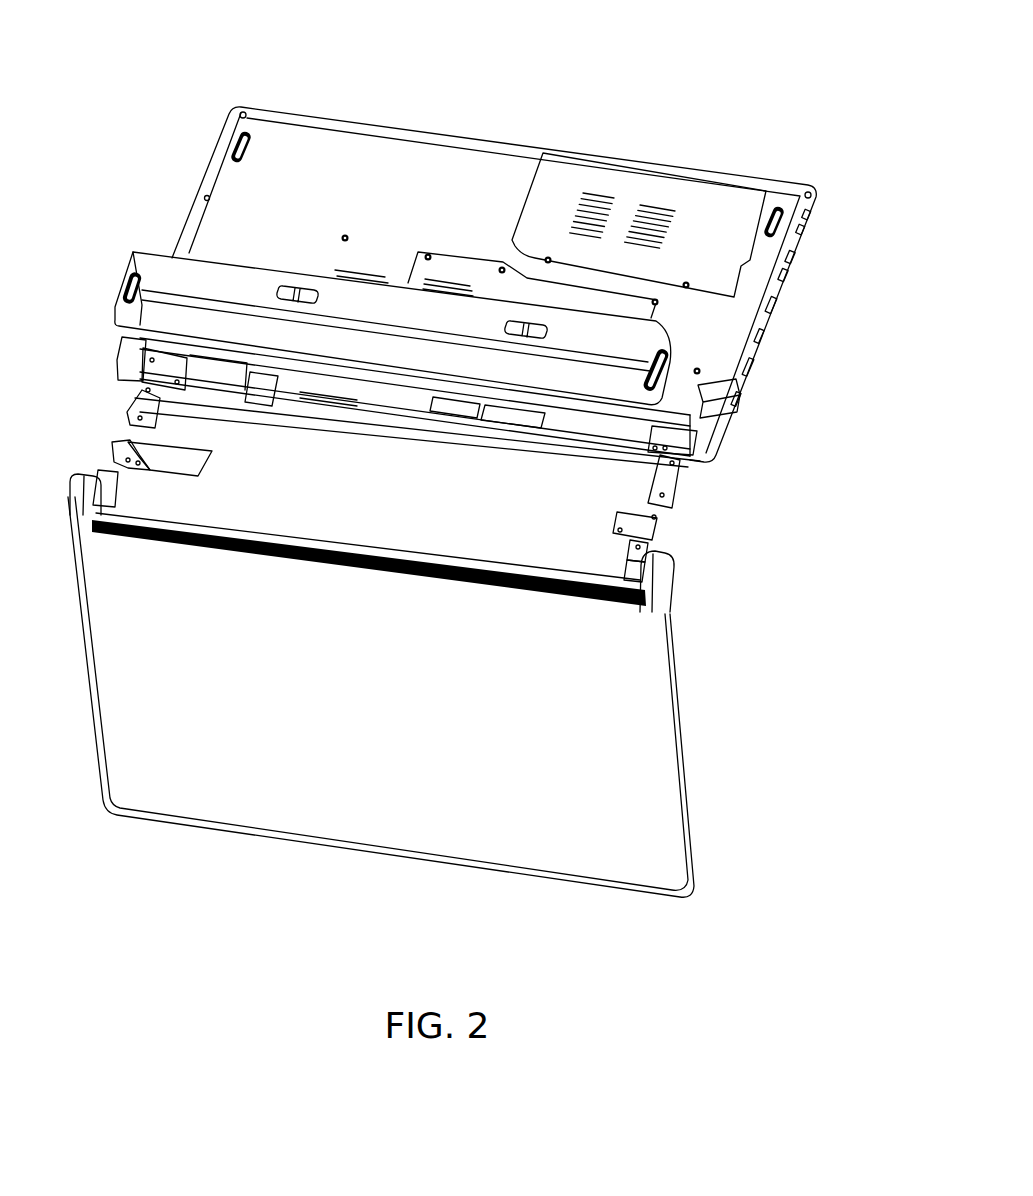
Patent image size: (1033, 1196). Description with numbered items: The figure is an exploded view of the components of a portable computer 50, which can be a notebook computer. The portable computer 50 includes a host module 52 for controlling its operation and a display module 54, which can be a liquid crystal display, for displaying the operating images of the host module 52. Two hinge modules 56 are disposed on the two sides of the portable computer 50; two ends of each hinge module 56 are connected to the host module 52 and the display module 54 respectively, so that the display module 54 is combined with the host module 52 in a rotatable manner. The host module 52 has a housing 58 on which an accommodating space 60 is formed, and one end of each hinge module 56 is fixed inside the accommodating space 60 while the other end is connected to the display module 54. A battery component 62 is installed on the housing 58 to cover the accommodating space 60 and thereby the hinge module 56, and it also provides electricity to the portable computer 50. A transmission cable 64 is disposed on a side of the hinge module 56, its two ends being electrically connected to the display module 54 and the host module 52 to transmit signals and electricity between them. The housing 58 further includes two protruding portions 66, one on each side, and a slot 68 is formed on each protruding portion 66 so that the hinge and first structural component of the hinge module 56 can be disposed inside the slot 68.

The portable computer 50 is at (652, 97).
The host module 52 is at (762, 370).
The display module 54 is at (705, 780).
The hinge module 56 is at (110, 448).
The housing 58 is at (143, 353).
The accommodating space 60 is at (170, 367).
The battery component 62 is at (153, 258).
The transmission cable 64 is at (110, 480).
The protruding portion 66 is at (157, 427).
The slot 68 is at (143, 410).